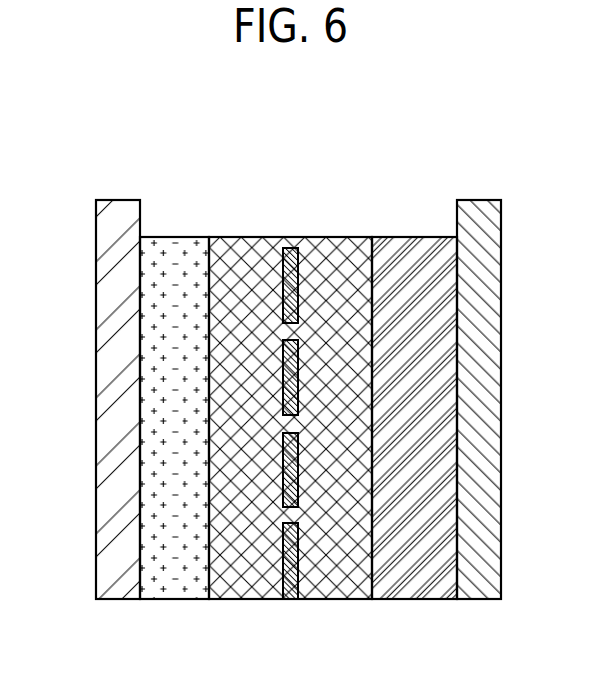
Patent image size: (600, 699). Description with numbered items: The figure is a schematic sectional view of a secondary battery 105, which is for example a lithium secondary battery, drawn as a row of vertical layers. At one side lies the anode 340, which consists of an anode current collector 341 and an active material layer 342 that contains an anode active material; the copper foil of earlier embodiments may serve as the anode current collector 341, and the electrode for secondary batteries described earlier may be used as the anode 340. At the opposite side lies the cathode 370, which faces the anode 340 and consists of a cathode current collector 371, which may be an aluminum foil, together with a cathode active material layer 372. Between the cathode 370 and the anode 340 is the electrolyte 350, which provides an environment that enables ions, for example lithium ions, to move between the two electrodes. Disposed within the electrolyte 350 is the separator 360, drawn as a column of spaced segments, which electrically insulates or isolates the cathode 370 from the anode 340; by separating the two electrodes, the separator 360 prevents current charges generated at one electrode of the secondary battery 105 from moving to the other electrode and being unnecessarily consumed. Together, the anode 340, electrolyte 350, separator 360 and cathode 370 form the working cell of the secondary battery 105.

The secondary battery 105 is at (67, 153).
The anode 340 is at (152, 445).
The anode current collector 341 is at (123, 588).
The active material layer 342 is at (188, 588).
The electrolyte 350 is at (234, 588).
The separator 360 is at (292, 588).
The cathode 370 is at (436, 445).
The cathode current collector 371 is at (487, 588).
The cathode active material layer 372 is at (422, 588).